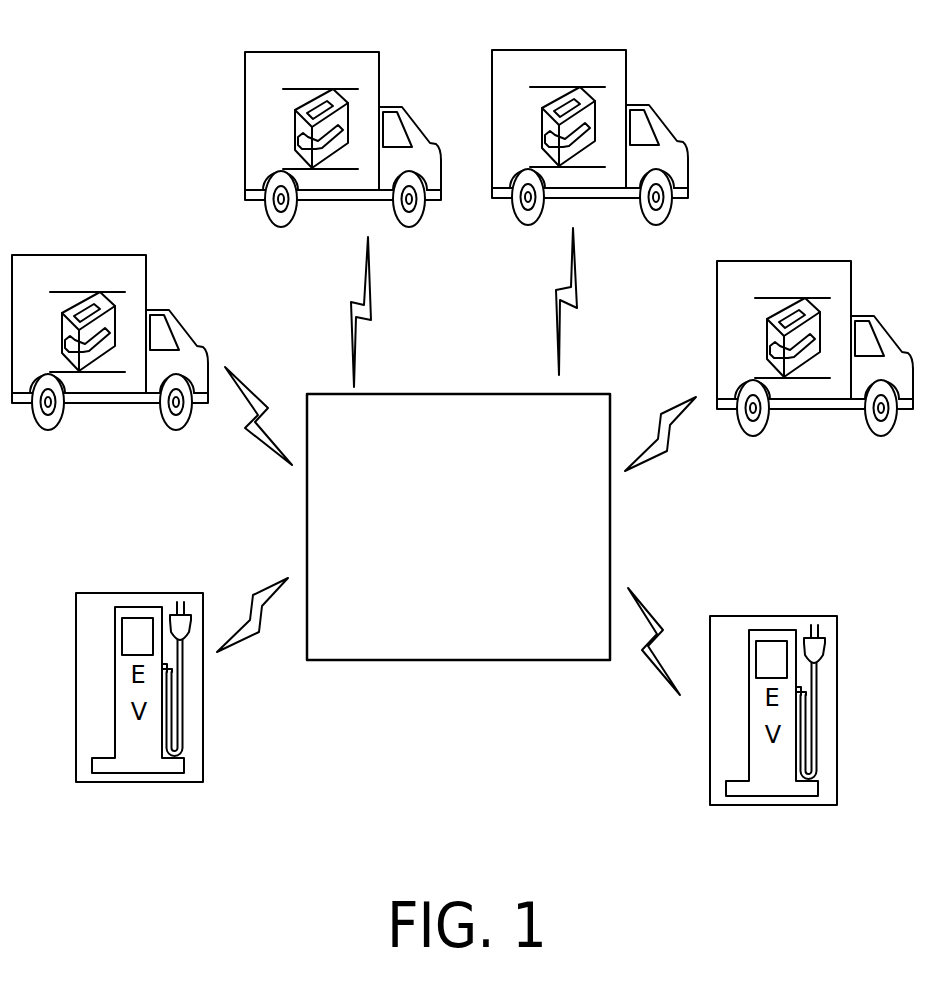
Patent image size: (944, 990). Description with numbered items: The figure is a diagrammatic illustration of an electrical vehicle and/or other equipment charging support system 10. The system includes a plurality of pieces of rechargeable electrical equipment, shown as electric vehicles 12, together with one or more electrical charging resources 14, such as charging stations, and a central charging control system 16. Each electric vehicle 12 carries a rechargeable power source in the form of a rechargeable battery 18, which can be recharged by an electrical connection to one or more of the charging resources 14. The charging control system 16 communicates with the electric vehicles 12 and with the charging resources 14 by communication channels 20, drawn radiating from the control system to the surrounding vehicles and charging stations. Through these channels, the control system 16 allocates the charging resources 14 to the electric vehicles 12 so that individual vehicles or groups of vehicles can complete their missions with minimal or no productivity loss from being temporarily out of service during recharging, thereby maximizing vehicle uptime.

The charging support system 10 is at (806, 66).
The electric vehicles 12 is at (380, 80).
The electrical charging resources 14 is at (138, 593).
The charging control system 16 is at (460, 393).
The rechargeable battery 18 is at (332, 88).
The communication channels 20 is at (352, 302).